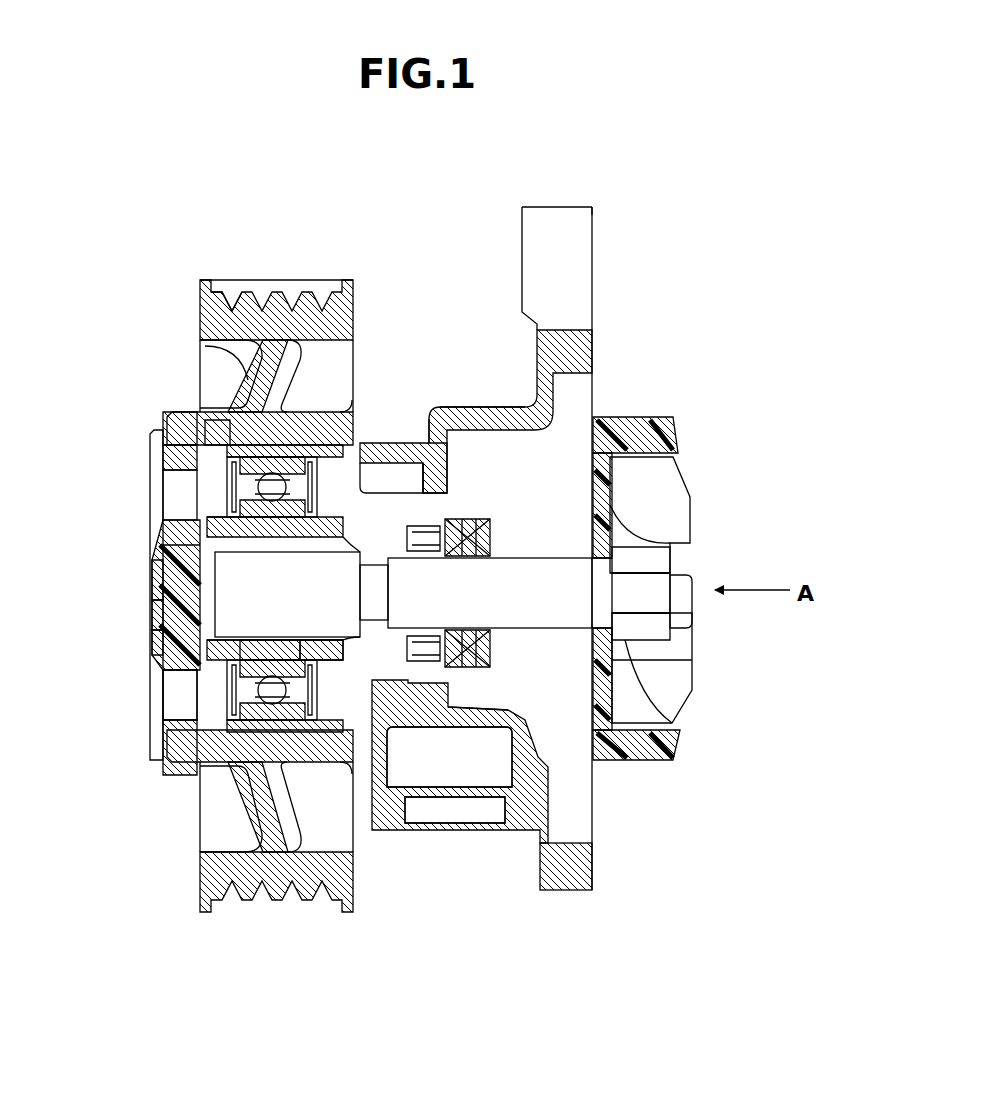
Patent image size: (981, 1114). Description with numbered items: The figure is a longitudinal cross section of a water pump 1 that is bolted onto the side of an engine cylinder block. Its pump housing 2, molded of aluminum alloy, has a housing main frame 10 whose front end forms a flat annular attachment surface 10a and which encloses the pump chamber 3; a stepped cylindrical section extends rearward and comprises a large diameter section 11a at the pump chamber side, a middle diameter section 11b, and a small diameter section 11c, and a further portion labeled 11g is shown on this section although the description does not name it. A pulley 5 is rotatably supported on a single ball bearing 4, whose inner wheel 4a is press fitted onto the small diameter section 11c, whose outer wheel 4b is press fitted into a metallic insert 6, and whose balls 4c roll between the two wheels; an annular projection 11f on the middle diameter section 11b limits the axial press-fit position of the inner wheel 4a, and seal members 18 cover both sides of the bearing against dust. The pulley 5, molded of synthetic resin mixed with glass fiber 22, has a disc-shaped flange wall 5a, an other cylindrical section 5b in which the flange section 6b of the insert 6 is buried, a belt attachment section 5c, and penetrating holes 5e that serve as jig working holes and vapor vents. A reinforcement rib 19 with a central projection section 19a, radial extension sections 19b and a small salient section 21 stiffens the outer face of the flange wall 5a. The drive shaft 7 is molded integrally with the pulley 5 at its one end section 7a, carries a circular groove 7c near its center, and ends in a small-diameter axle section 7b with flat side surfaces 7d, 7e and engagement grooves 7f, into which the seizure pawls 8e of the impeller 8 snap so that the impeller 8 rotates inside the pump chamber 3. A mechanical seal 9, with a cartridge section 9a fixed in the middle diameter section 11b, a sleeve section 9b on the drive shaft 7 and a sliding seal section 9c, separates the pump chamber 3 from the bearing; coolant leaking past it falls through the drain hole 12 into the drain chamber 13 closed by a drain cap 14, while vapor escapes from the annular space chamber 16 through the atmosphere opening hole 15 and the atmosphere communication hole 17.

The water pump 1 is at (632, 183).
The pump housing 2 is at (598, 340).
The pump chamber 3 is at (585, 390).
The ball bearing 4 is at (325, 870).
The inner wheel 4a is at (300, 500).
The outer wheel 4b is at (287, 455).
The balls 4c is at (170, 420).
The pulley 5 is at (272, 278).
The flange wall 5a is at (165, 675).
The other cylindrical section 5b is at (257, 420).
The belt attachment section 5c is at (235, 310).
The penetrating holes 5e is at (178, 497).
The insert 6 is at (255, 765).
The flange section 6b is at (235, 760).
The drive shaft 7 is at (674, 528).
The one end section 7a is at (165, 555).
The small-diameter axle section 7b is at (635, 588).
The circular groove 7c is at (230, 520).
The side surface 7d is at (688, 545).
The side surface 7e is at (658, 623).
The engagement grooves 7f is at (648, 597).
The impeller 8 is at (610, 533).
The seizure pawls 8e is at (667, 577).
The mechanical seal 9 is at (663, 697).
The cartridge section 9a is at (600, 418).
The sleeve section 9b is at (596, 455).
The seal section 9c is at (600, 493).
The housing main frame 10 is at (563, 877).
The attachment surface 10a is at (585, 287).
The large diameter section 11a is at (483, 407).
The middle diameter section 11b is at (345, 673).
The small diameter section 11c is at (175, 450).
The annular projection 11f is at (320, 680).
The recess 11g is at (262, 665).
The drain hole 12 is at (408, 707).
The drain chamber 13 is at (465, 763).
The drain cap 14 is at (452, 797).
The atmosphere opening hole 15 is at (380, 487).
The annular space chamber 16 is at (375, 640).
The atmosphere communication hole 17 is at (395, 477).
The seal members 18 is at (235, 730).
The reinforcement rib 19 is at (148, 620).
The projection section 19a is at (160, 570).
The extension sections 19b is at (153, 465).
The salient section 21 is at (160, 600).
The glass fiber 22 is at (160, 625).